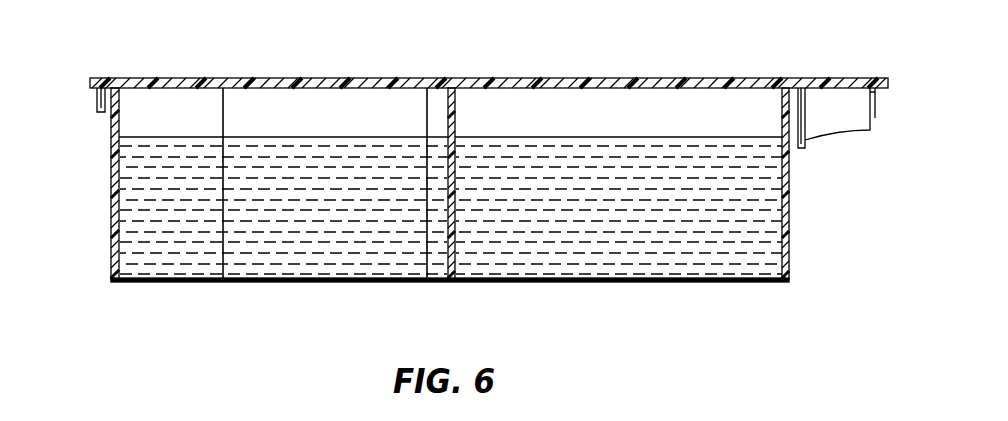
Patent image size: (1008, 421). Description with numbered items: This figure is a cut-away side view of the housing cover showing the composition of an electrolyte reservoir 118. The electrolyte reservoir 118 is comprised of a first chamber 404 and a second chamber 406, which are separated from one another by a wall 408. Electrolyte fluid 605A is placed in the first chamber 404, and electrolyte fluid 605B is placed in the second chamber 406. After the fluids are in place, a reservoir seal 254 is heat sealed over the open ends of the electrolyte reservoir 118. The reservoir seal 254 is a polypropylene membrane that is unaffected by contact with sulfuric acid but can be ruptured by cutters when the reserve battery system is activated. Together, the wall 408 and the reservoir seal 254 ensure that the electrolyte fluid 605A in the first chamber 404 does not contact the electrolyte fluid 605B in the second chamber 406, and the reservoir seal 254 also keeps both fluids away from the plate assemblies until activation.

The electrolyte reservoir 118 is at (110, 200).
The reservoir seal 254 is at (330, 283).
The wall 408 is at (455, 110).
The first chamber 404 is at (273, 237).
The second chamber 406 is at (668, 258).
The electrolyte fluid 605A is at (168, 242).
The electrolyte fluid 605B is at (555, 245).